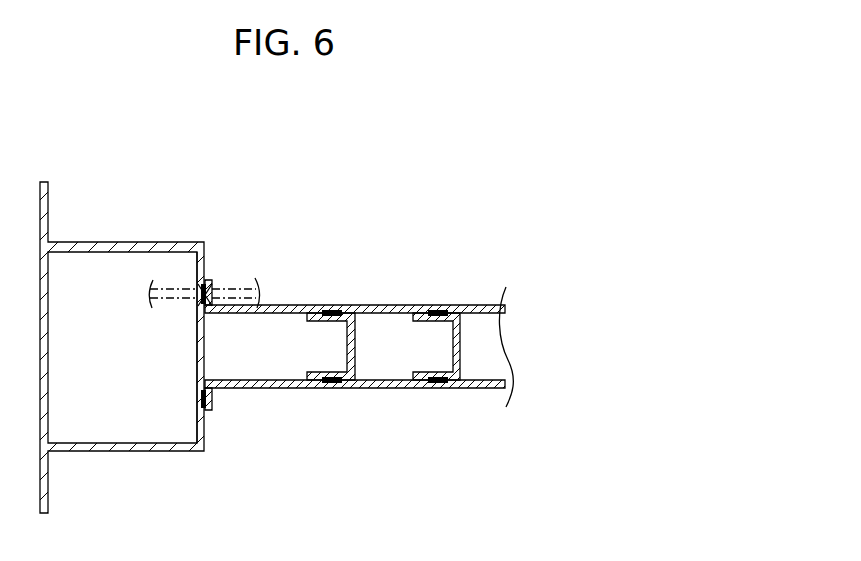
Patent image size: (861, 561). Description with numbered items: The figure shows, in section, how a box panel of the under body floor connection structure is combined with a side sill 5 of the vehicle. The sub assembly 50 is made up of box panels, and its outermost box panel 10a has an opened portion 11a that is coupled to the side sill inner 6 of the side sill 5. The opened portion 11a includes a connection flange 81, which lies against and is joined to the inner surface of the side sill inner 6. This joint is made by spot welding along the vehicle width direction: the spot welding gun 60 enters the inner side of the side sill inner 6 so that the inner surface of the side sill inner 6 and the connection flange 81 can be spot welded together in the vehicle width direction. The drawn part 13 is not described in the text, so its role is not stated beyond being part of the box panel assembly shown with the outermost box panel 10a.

The side sill 5 is at (136, 234).
The side sill inner 6 is at (197, 365).
The connection flange 81 is at (212, 283).
The spot welding gun 60 is at (168, 287).
The sub assembly 50 is at (405, 296).
The opened portion 11a is at (353, 351).
The seal insert 13 is at (319, 394).
The outermost box panel 10a is at (353, 367).